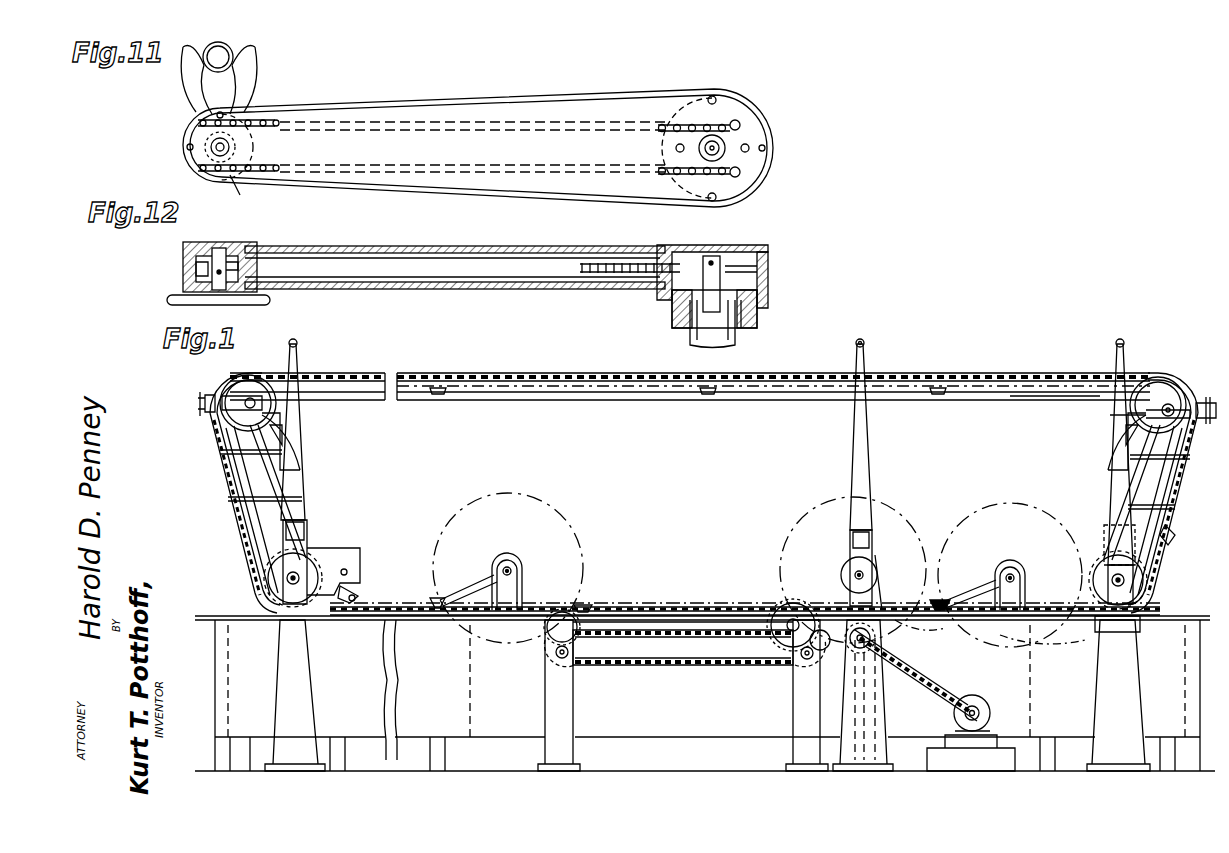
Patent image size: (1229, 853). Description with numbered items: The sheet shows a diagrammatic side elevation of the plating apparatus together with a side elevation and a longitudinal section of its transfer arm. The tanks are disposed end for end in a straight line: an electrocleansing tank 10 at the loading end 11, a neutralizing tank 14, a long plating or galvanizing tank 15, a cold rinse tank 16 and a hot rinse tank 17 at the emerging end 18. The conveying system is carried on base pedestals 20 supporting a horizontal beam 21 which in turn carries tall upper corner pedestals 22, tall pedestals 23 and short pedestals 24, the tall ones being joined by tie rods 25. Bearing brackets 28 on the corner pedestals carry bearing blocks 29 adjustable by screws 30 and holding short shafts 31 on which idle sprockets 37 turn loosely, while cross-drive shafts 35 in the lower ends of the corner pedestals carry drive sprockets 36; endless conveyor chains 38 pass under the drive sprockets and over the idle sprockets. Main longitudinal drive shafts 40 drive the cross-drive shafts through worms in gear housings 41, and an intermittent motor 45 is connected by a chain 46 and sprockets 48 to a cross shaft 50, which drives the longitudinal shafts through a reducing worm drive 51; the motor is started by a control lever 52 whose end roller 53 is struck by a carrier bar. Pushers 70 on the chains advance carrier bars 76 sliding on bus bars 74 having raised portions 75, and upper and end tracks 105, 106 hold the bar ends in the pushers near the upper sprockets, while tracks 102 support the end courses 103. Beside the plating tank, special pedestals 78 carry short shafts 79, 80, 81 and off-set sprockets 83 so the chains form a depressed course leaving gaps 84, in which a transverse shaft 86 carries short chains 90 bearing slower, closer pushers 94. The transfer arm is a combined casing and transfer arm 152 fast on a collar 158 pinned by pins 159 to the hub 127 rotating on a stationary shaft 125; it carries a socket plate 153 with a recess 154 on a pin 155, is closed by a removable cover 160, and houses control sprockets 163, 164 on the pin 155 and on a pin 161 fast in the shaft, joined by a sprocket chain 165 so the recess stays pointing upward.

In FIG. 1, the electrocleansing tank 10 is at (301, 695).
In FIG. 1, the loading end 11 is at (249, 493).
In FIG. 1, the neutralizing tank 14 is at (432, 690).
In FIG. 1, the plating or galvanizing tank 15 is at (683, 659).
In FIG. 1, the cold rinse tank 16 is at (941, 658).
In FIG. 1, the hot rinse tank 17 is at (1115, 695).
In FIG. 1, the emerging end 18 is at (1153, 493).
In FIG. 1, the base pedestals 20 is at (862, 765).
In FIG. 1, the horizontal beam 21 is at (1080, 624).
In FIG. 1, the upper corner pedestals 22 is at (300, 500).
In FIG. 1, the upper pedestals 23 is at (862, 460).
In FIG. 1, the short upper pedestals 24 is at (522, 588).
In FIG. 1, the tie rods 25 is at (866, 345).
In FIG. 1, the bearing brackets 28 is at (1112, 417).
In FIG. 1, the bearing blocks 29 is at (1178, 400).
In FIG. 1, the screws 30 is at (1208, 398).
In FIG. 1, the short shafts 31 is at (1170, 370).
In FIG. 1, the cross-drive shafts 35 is at (1115, 577).
In FIG. 1, the drive sprockets 36 is at (1095, 562).
In FIG. 1, the idle sprockets 37 is at (1152, 395).
In FIG. 1, the endless conveyor chains 38 is at (985, 375).
In FIG. 1, the main longitudinal drive shafts 40 is at (900, 630).
In FIG. 1, the gear housings 41 is at (1117, 634).
In FIG. 1, the intermittent motor 45 is at (948, 728).
In FIG. 1, the chain 46 is at (940, 692).
In FIG. 1, the sprockets 48 is at (974, 703).
In FIG. 1, the cross shaft 50 is at (852, 650).
In FIG. 1, the reducing worm drive 51 is at (866, 618).
In FIG. 1, the control lever 52 is at (355, 565).
In FIG. 1, the end roller 53 is at (360, 585).
In FIG. 1, the pushers 70 is at (710, 396).
In FIG. 1, the bus bars 74 is at (378, 600).
In FIG. 1, the raised portions 75 is at (880, 608).
In FIG. 1, the carrier bars 76 is at (440, 596).
In FIG. 1, the special pedestals 78 is at (573, 706).
In FIG. 1, the short shaft 79 is at (570, 656).
In FIG. 1, the short shaft 80 is at (558, 610).
In FIG. 1, the short shaft 81 is at (782, 612).
In FIG. 1, the lower sprocket 83 is at (683, 646).
In FIG. 1, the gaps 84 is at (585, 610).
In FIG. 1, the transverse shaft 86 is at (734, 651).
In FIG. 1, the short chains 90 is at (654, 651).
In FIG. 1, the pushers 94 is at (675, 660).
In FIG. 1, the tracks 102 is at (222, 450).
In FIG. 1, the end courses 103 is at (228, 498).
In FIG. 1, the upper track 105 is at (985, 400).
In FIG. 1, the end track 106 is at (1150, 480).
In FIG. 12, the stationary shaft 125 is at (688, 340).
In FIG. 12, the hub 127 is at (758, 320).
In FIG. 11, the combined casing and transfer arm 152 is at (486, 100).
In FIG. 12, the combined casing and transfer arm 152 is at (478, 292).
In FIG. 1, the combined casing and transfer arm 152 is at (478, 575).
In FIG. 11, the socket plate 153 is at (252, 58).
In FIG. 12, the socket plate 153 is at (270, 302).
In FIG. 11, the recess 154 is at (240, 52).
In FIG. 11, the pin 155 is at (232, 185).
In FIG. 12, the collar 158 is at (770, 296).
In FIG. 12, the pins 159 is at (745, 328).
In FIG. 12, the removable cover 160 is at (760, 246).
In FIG. 12, the pin 161 is at (712, 254).
In FIG. 12, the control sprocket 163 is at (262, 250).
In FIG. 12, the control sprocket 164 is at (770, 268).
In FIG. 11, the sprocket chain 165 is at (640, 200).
In FIG. 12, the sprocket chain 165 is at (630, 268).